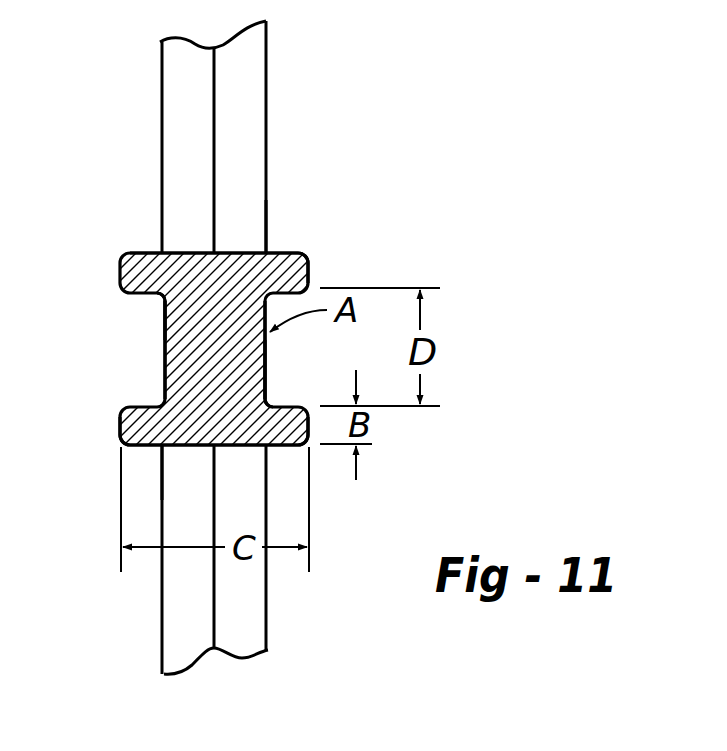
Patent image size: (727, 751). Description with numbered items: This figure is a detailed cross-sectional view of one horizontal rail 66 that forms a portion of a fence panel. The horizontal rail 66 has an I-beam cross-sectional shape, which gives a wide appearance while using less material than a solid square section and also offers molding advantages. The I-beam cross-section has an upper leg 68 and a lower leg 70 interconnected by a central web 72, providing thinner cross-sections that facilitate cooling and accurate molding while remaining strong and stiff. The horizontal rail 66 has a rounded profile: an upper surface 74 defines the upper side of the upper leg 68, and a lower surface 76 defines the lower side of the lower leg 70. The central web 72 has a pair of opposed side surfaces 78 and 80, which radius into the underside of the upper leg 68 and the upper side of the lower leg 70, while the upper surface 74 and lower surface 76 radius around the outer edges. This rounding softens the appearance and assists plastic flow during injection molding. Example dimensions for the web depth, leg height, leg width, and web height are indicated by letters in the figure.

The horizontal rail 66 is at (316, 259).
The upper leg 68 is at (182, 254).
The lower leg 70 is at (128, 422).
The central web 72 is at (192, 372).
The upper surface 74 is at (247, 254).
The lower surface 76 is at (187, 447).
The side surface 78 is at (163, 335).
The side surface 80 is at (265, 364).